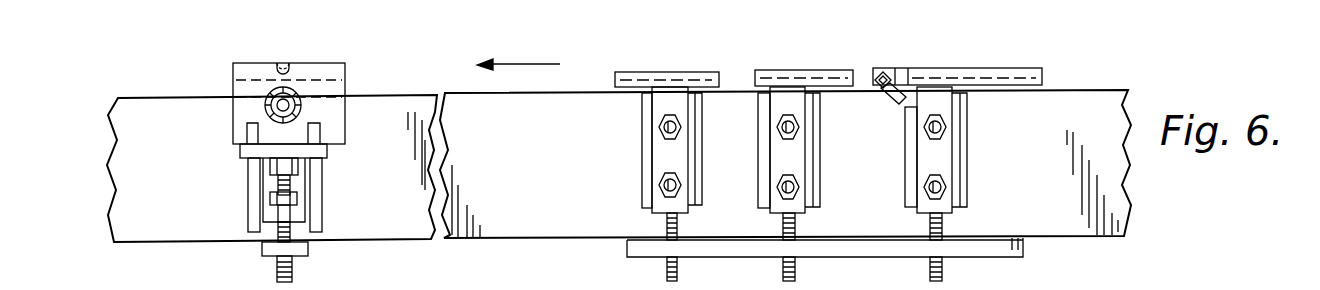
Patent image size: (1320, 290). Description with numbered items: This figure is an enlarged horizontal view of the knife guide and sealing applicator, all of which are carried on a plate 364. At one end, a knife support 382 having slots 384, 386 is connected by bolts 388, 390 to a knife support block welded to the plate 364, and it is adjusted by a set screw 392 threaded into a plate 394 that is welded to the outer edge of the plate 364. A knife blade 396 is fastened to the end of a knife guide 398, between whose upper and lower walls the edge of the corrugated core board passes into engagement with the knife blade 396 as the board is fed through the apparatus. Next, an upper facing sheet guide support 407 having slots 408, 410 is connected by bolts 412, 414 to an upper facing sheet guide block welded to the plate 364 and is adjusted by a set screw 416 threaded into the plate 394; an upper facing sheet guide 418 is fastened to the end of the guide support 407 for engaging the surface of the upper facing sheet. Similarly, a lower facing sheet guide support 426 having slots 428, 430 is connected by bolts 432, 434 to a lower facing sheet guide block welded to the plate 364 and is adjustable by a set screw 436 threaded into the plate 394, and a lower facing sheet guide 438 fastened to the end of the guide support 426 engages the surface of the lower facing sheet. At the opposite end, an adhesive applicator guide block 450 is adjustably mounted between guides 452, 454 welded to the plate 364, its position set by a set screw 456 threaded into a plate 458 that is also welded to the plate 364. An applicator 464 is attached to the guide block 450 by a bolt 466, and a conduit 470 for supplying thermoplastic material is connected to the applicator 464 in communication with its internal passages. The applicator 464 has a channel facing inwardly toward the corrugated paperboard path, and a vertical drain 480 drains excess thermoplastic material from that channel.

The plate 364 is at (436, 243).
The knife support 382 is at (945, 148).
The slot 384 is at (937, 114).
The slot 386 is at (937, 174).
The bolt 388 is at (944, 128).
The bolt 390 is at (944, 190).
The set screw 392 is at (944, 228).
The plate 394 is at (1003, 248).
The knife blade 396 is at (897, 102).
The knife guide 398 is at (1030, 38).
The upper facing sheet guide support 407 is at (779, 150).
The slot 408 is at (788, 113).
The slot 410 is at (788, 174).
The bolt 412 is at (777, 129).
The bolt 414 is at (778, 192).
The set screw 416 is at (797, 227).
The upper facing sheet guide 418 is at (813, 33).
The lower facing sheet guide support 426 is at (660, 148).
The slot 428 is at (668, 114).
The slot 430 is at (668, 173).
The bolt 432 is at (658, 130).
The bolt 434 is at (660, 192).
The set screw 436 is at (667, 272).
The lower facing sheet guide 438 is at (695, 38).
The adhesive applicator guide block 450 is at (303, 182).
The guide 452 is at (252, 174).
The guide 454 is at (317, 204).
The set screw 456 is at (277, 266).
The plate 458 is at (309, 246).
The applicator 464 is at (344, 110).
The bolt 466 is at (270, 198).
The conduit 470 is at (265, 107).
The vertical drain 480 is at (305, 30).